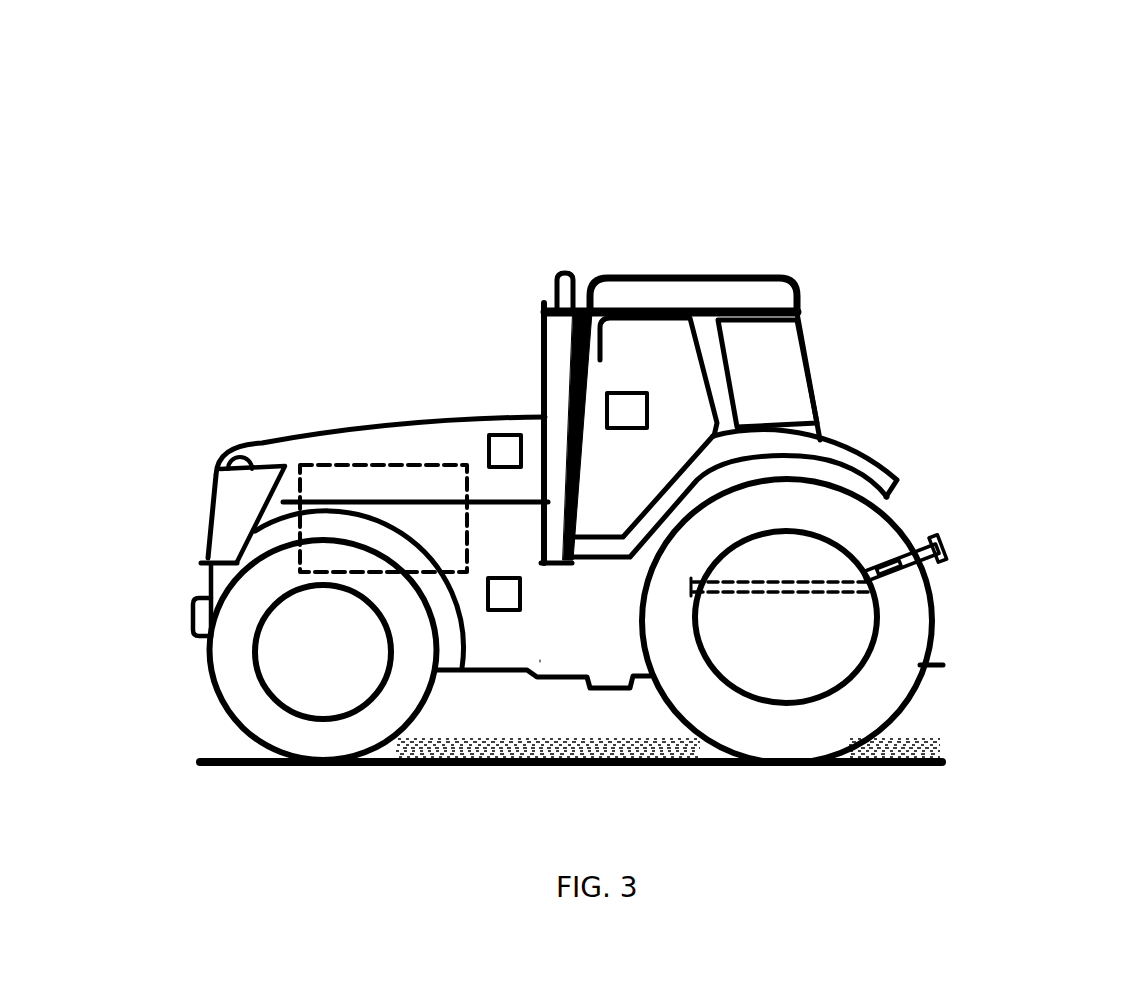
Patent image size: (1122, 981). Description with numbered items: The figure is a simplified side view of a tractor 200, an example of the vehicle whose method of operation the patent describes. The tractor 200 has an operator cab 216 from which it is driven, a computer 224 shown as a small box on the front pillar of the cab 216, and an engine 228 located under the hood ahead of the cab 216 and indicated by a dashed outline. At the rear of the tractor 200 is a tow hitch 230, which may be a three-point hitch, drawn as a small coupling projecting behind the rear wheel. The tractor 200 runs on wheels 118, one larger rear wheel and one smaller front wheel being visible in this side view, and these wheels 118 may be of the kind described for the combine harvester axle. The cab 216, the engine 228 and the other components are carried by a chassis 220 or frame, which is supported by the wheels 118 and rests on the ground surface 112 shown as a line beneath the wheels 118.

The ground surface 112 is at (660, 801).
The wheels 118 is at (297, 733).
The tractor 200 is at (289, 180).
The operator cab 216 is at (643, 350).
The chassis 220 is at (543, 637).
The computer 224 is at (613, 412).
The engine 228 is at (314, 490).
The tow hitch 230 is at (963, 539).